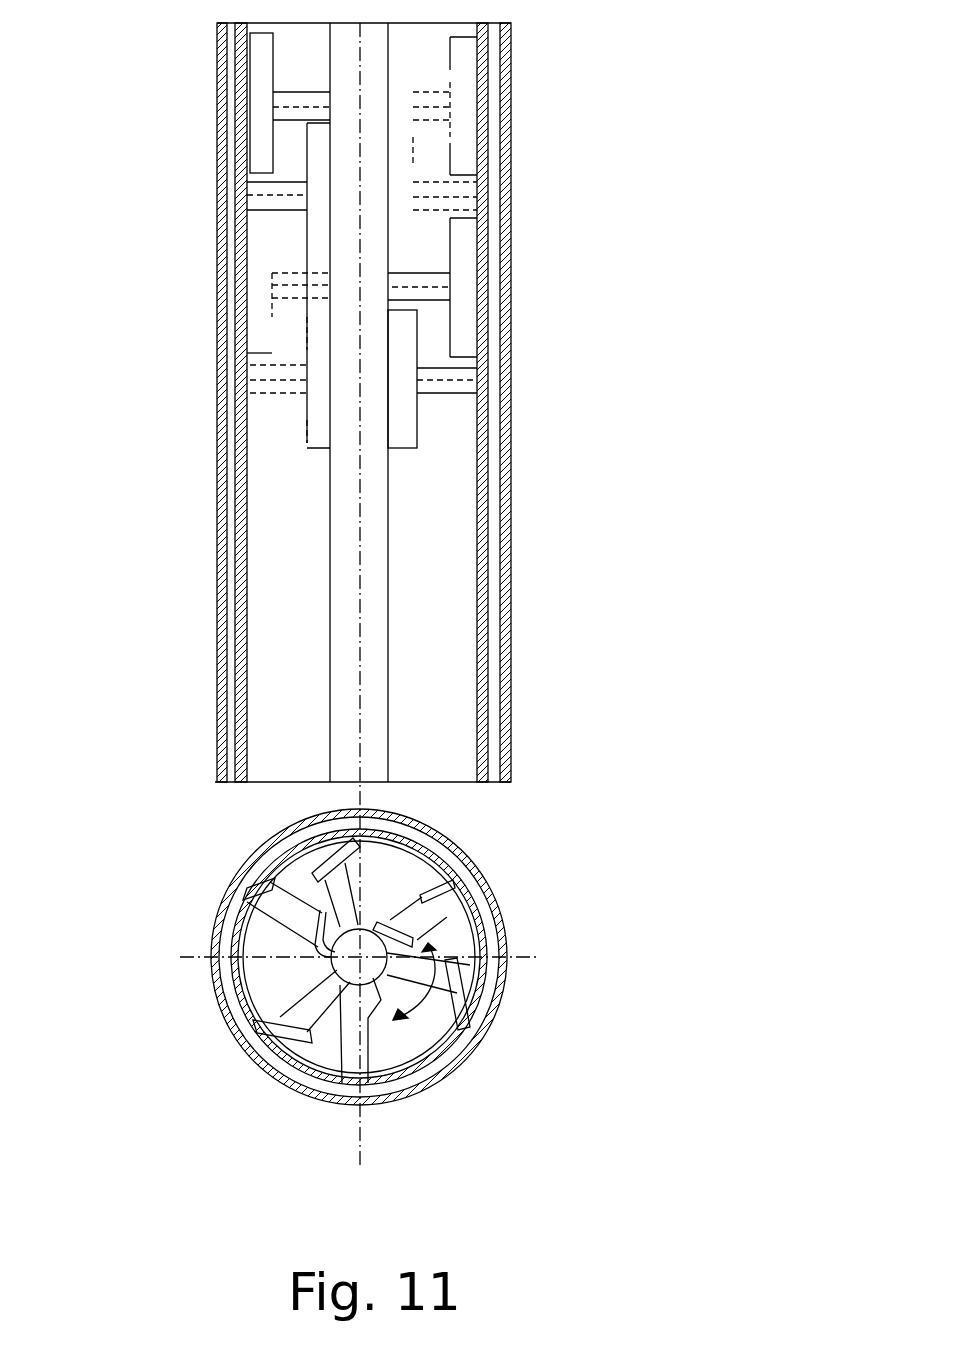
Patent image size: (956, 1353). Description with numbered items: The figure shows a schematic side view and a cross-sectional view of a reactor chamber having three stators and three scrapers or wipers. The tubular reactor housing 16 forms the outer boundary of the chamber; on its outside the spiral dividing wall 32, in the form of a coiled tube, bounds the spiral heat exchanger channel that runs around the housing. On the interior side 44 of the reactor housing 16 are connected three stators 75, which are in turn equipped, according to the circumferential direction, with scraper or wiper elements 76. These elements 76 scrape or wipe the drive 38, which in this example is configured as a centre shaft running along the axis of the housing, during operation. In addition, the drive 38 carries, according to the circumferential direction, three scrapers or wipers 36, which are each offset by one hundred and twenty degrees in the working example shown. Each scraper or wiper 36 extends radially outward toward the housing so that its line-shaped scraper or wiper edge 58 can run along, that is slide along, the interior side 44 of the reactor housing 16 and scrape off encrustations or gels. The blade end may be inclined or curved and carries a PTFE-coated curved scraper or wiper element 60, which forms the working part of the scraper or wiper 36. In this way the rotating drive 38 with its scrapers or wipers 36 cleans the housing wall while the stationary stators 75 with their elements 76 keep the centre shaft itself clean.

The tubular reactor housing 16 is at (490, 263).
The spiral dividing wall 32 is at (512, 338).
The scraper or wiper 36 is at (286, 75).
The drive 38 is at (337, 1087).
The interior side of the reactor housing 44 is at (483, 513).
The scraper or wiper edge 58 is at (442, 997).
The scraper or wiper element 60 is at (510, 957).
The stator 75 is at (281, 208).
The scraper or wiper element 76 is at (333, 243).